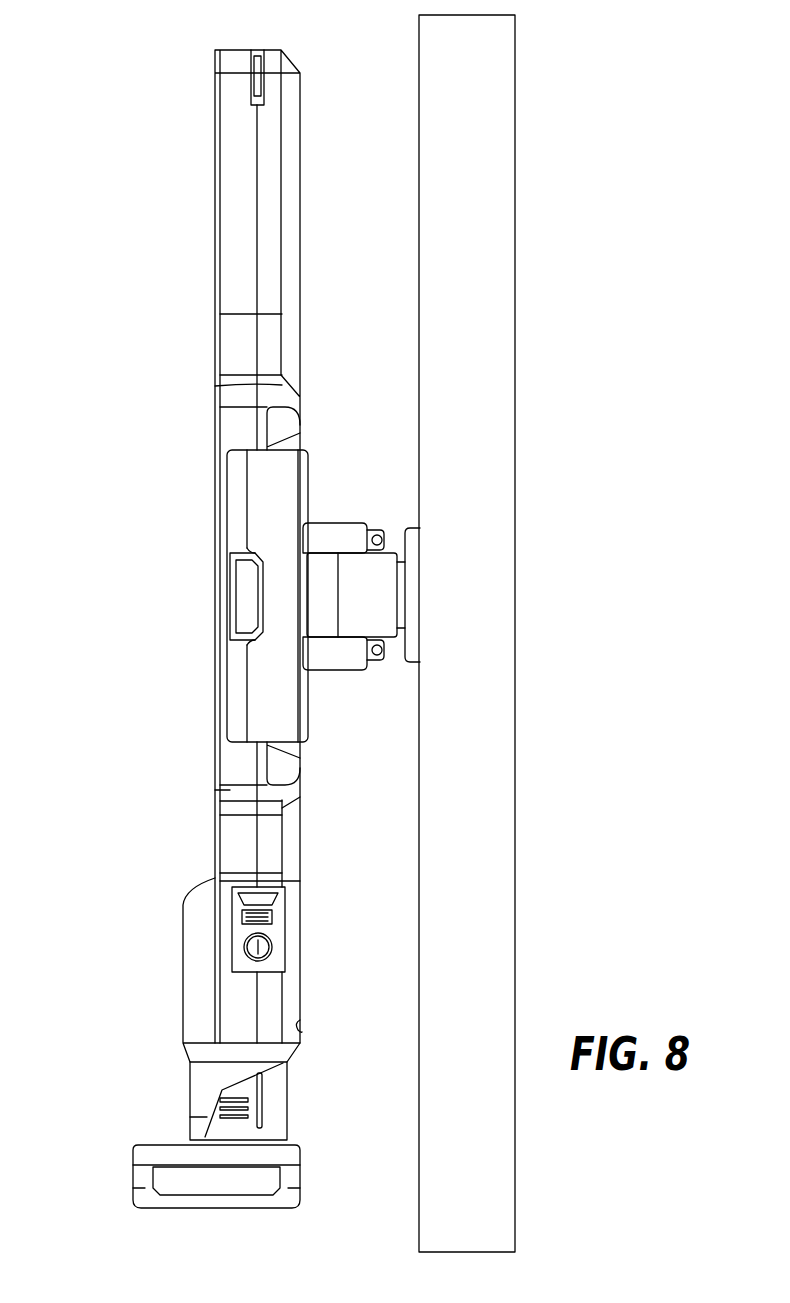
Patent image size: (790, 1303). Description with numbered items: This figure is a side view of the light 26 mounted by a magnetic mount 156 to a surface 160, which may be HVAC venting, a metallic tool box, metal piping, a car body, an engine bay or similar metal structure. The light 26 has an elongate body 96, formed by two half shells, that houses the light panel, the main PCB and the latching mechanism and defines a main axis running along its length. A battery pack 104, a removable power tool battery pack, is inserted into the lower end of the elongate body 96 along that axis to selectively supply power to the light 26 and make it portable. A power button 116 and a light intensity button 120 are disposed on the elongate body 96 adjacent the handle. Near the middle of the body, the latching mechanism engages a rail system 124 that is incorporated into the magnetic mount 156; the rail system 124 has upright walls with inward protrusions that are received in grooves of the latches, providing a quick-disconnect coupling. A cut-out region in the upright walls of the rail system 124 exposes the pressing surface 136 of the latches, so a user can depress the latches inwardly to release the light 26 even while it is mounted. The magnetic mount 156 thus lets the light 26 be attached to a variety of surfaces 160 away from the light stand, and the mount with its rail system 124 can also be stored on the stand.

The light 26 is at (135, 482).
The elongate body 96 is at (215, 188).
The battery pack 104 is at (207, 1210).
The power button 116 is at (243, 940).
The light intensity button 120 is at (243, 918).
The rail system 124 is at (282, 482).
The pressing surface 136 is at (245, 603).
The magnetic mount 156 is at (410, 572).
The surface 160 is at (516, 650).